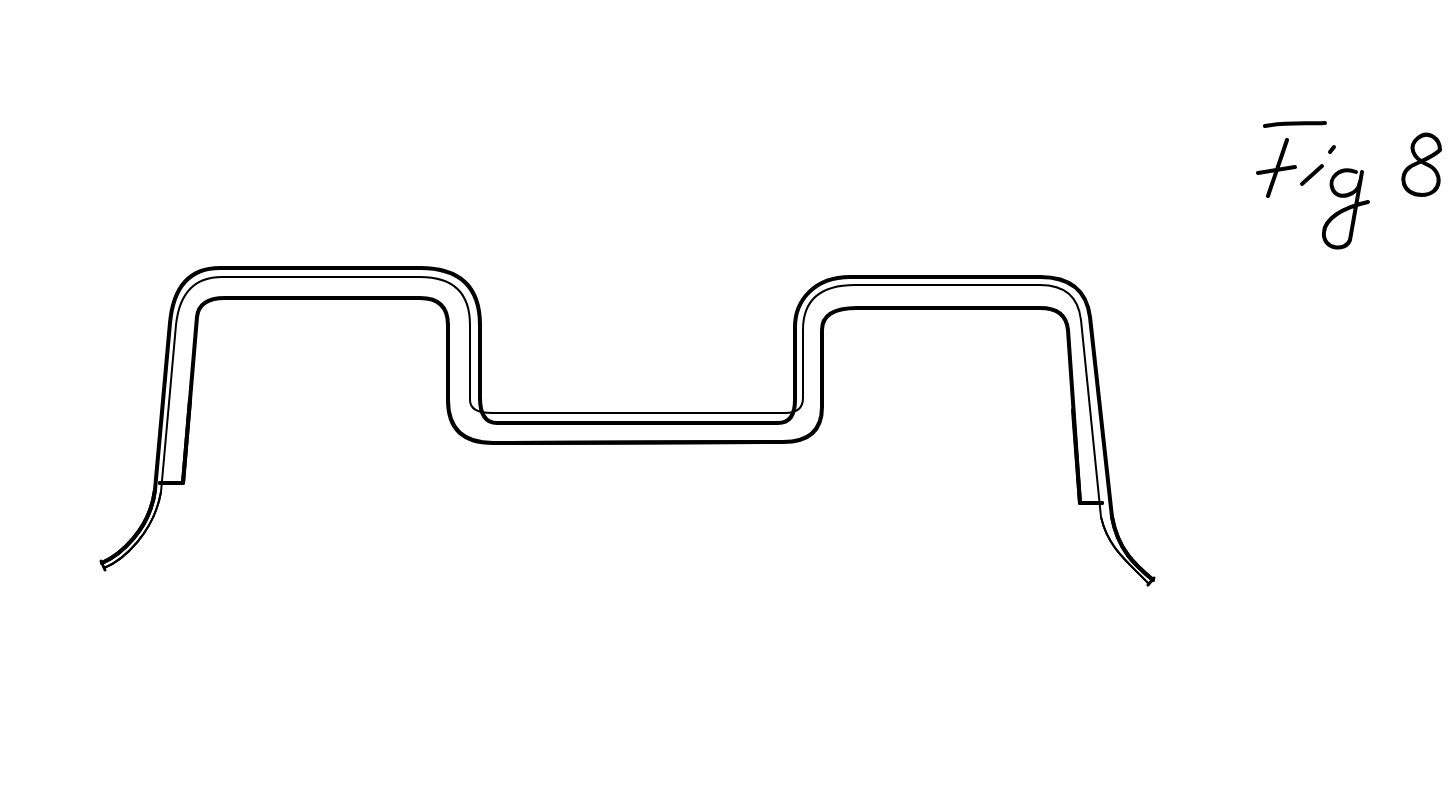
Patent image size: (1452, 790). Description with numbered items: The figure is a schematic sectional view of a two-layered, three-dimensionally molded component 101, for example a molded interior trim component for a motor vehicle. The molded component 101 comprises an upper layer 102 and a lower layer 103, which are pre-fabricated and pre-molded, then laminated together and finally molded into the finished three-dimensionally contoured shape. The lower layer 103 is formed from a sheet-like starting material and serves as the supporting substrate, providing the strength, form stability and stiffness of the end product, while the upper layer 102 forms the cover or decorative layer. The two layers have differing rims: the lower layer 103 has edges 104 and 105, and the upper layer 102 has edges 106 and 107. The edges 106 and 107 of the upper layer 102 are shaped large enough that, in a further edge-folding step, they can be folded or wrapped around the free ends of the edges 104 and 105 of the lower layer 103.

The molded component 101 is at (630, 285).
The upper layer 102 is at (312, 262).
The lower layer 103 is at (572, 507).
The edge of the lower layer 104 is at (218, 477).
The edge of the lower layer 105 is at (1087, 488).
The edge of the upper layer 106 is at (127, 550).
The edge of the upper layer 107 is at (1127, 567).